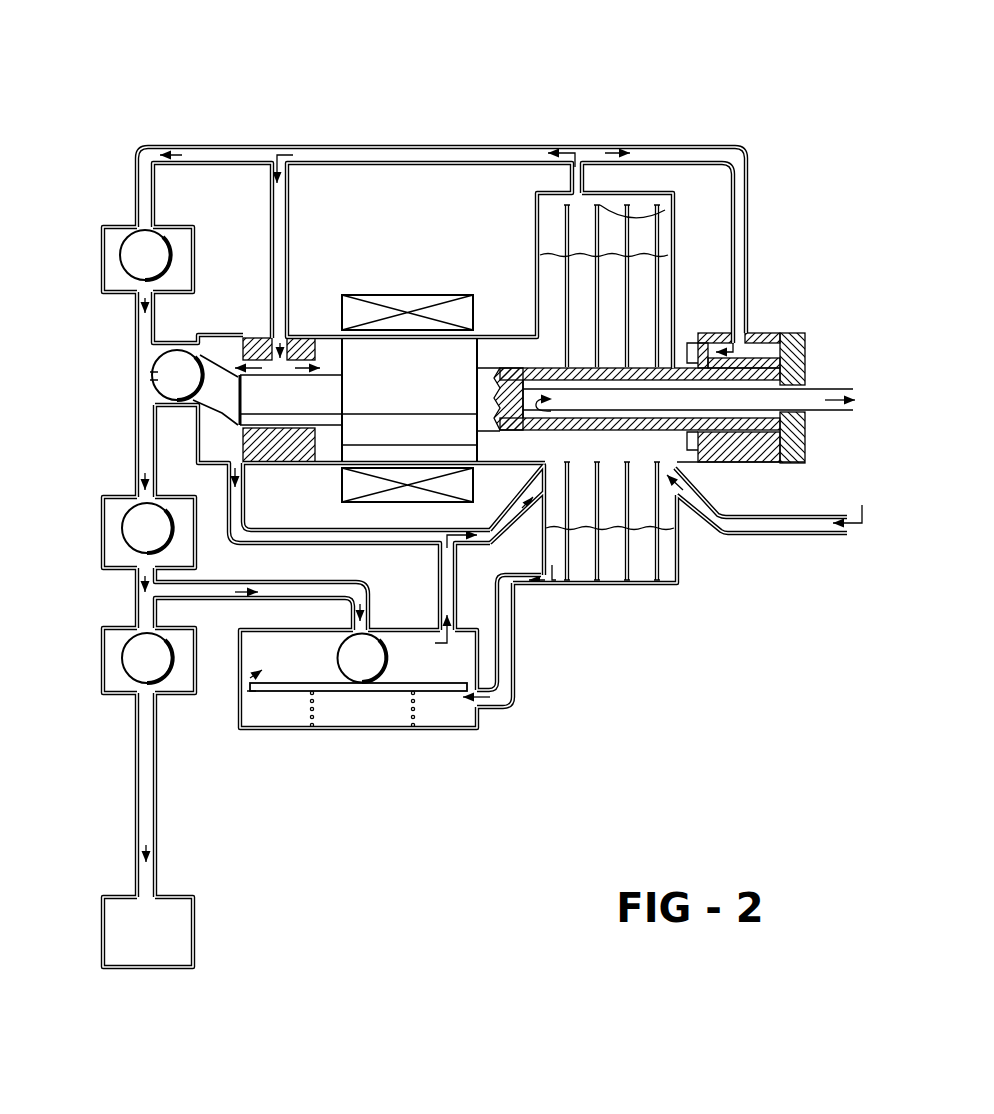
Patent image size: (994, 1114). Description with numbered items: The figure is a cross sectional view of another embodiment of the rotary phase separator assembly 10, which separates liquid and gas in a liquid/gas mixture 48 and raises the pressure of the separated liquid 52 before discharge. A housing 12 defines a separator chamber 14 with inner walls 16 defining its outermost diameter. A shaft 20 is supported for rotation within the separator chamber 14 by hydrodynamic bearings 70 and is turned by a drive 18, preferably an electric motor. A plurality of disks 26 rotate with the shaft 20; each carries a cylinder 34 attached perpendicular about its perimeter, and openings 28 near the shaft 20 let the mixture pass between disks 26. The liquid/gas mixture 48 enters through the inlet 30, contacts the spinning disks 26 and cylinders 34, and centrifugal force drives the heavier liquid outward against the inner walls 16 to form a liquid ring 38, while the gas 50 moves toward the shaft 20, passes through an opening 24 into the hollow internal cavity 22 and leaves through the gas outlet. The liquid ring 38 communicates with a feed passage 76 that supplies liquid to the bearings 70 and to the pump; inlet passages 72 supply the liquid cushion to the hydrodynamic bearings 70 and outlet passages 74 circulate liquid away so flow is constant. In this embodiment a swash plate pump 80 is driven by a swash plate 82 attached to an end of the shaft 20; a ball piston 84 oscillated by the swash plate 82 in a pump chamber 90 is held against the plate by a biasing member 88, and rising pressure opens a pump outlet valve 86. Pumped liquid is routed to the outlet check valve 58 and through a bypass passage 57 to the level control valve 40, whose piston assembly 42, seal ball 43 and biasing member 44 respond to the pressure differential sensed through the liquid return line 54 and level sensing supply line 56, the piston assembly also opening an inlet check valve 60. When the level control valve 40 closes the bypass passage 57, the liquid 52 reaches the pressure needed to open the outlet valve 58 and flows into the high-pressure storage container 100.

The rotary phase separator assembly 10 is at (364, 74).
The housing 12 is at (806, 432).
The separator chamber 14 is at (668, 207).
The inner walls 16 is at (603, 203).
The drive 18 is at (402, 288).
The shaft 20 is at (798, 330).
The hollow internal cavity 22 is at (805, 385).
The opening 24 is at (679, 466).
The disks 26 is at (623, 585).
The openings 28 is at (614, 468).
The liquid/gas inlet 30 is at (795, 530).
The cylinder 34 is at (636, 588).
The liquid ring 38 is at (672, 238).
The level control valve 40 is at (425, 740).
The piston assembly 42 is at (288, 702).
The seal ball 43 is at (387, 634).
The biasing member 44 is at (315, 720).
The liquid/gas mixture 48 is at (857, 501).
The gas 50 is at (823, 390).
The liquid 52 is at (612, 135).
The liquid return line 54 is at (522, 548).
The level sensing supply line 56 is at (520, 700).
The bypass passage 57 is at (238, 608).
The outlet check valve 58 is at (97, 690).
The inlet check valve 60 is at (110, 224).
The hydrodynamic bearings 70 is at (292, 330).
The inlet passages 72 is at (750, 200).
The outlet passages 74 is at (724, 340).
The feed passage 76 is at (478, 132).
The swash plate pump 80 is at (275, 467).
The swash plate 82 is at (226, 420).
The ball piston 84 is at (160, 372).
The pump outlet valve 86 is at (115, 535).
The biasing member 88 is at (186, 337).
The pump chamber 90 is at (162, 386).
The high-pressure storage container 100 is at (178, 930).